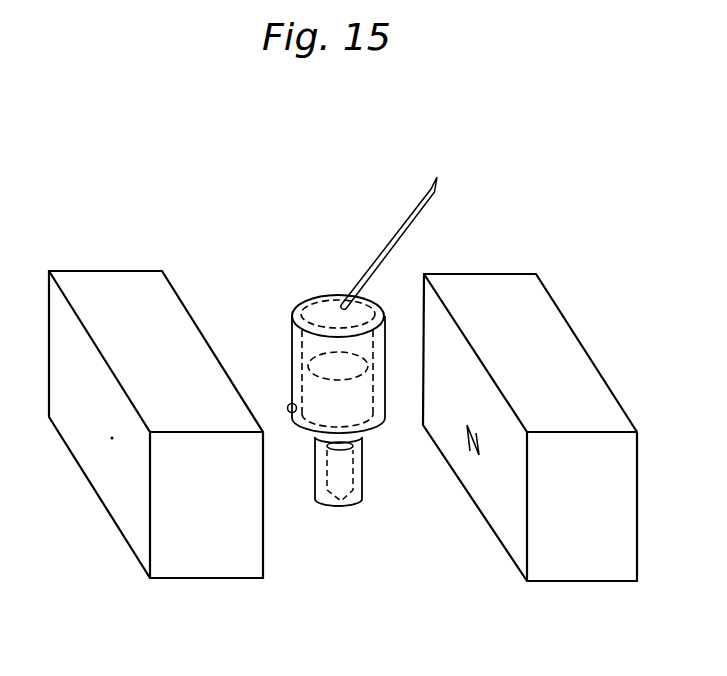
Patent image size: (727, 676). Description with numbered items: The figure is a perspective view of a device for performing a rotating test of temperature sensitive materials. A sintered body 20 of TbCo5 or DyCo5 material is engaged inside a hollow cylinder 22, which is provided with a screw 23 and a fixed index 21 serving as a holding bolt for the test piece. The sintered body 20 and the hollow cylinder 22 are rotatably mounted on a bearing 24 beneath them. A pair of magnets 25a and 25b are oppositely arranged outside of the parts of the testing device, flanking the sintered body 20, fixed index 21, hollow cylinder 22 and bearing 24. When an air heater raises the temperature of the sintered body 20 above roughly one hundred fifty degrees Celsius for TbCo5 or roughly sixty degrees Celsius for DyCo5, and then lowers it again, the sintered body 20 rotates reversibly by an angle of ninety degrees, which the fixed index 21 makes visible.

The sintered body 20 is at (363, 412).
The fixed index 21 is at (412, 214).
The hollow cylinder 22 is at (386, 327).
The screw 23 is at (289, 406).
The bearing 24 is at (323, 483).
The magnet 25a is at (202, 573).
The magnet 25b is at (584, 576).